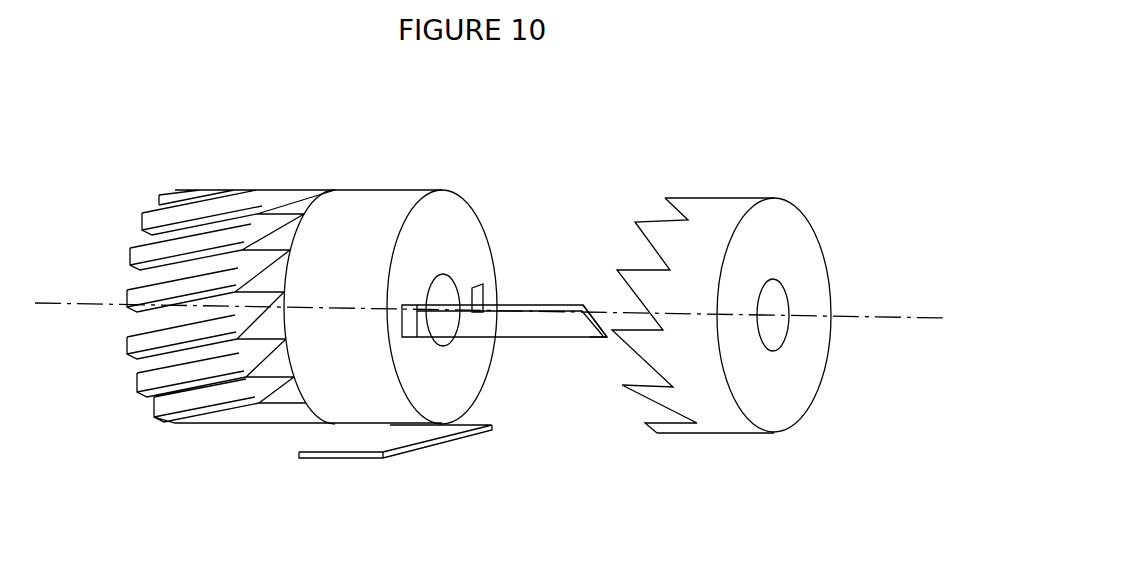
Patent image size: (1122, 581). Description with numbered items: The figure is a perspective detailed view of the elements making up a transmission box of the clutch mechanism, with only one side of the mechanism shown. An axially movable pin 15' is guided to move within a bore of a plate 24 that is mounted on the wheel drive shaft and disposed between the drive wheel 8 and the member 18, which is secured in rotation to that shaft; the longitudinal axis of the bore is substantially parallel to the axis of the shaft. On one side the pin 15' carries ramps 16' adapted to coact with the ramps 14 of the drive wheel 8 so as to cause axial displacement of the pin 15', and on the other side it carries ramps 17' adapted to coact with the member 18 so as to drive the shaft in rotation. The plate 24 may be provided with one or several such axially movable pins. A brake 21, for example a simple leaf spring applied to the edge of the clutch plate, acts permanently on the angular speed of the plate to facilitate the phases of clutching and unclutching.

The drive wheel 8 is at (180, 228).
The ramps 14 is at (295, 200).
The plate 24 is at (392, 214).
The brake 21 is at (357, 445).
The pin 15' is at (525, 258).
The ramps 16' is at (513, 364).
The ramps 17' is at (644, 430).
The member 18 is at (713, 212).